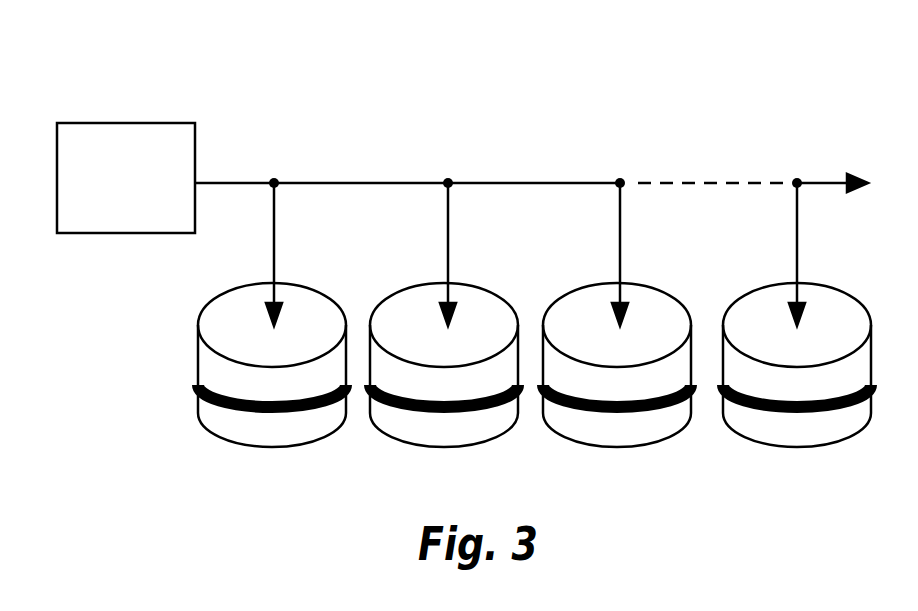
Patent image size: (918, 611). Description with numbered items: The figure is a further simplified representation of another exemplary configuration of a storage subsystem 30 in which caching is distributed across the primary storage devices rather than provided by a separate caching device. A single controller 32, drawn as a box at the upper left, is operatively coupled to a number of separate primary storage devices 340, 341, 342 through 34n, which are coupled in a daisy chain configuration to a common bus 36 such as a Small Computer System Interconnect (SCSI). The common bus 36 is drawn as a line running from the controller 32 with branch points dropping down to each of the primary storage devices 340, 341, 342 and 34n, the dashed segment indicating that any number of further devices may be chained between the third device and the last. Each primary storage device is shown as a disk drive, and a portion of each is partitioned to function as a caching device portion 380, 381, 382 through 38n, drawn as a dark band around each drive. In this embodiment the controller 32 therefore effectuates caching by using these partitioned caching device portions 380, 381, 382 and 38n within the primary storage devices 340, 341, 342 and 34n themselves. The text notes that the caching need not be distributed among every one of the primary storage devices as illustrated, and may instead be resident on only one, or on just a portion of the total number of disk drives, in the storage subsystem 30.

The storage subsystem 30 is at (96, 300).
The controller 32 is at (137, 122).
The common bus 36 is at (465, 182).
The primary storage device 340 is at (228, 427).
The primary storage device 341 is at (432, 430).
The primary storage device 342 is at (615, 438).
The primary storage device 34n is at (818, 442).
The caching device portion 380 is at (207, 389).
The caching device portion 381 is at (374, 400).
The caching device portion 382 is at (552, 402).
The caching device portion 38n is at (735, 402).